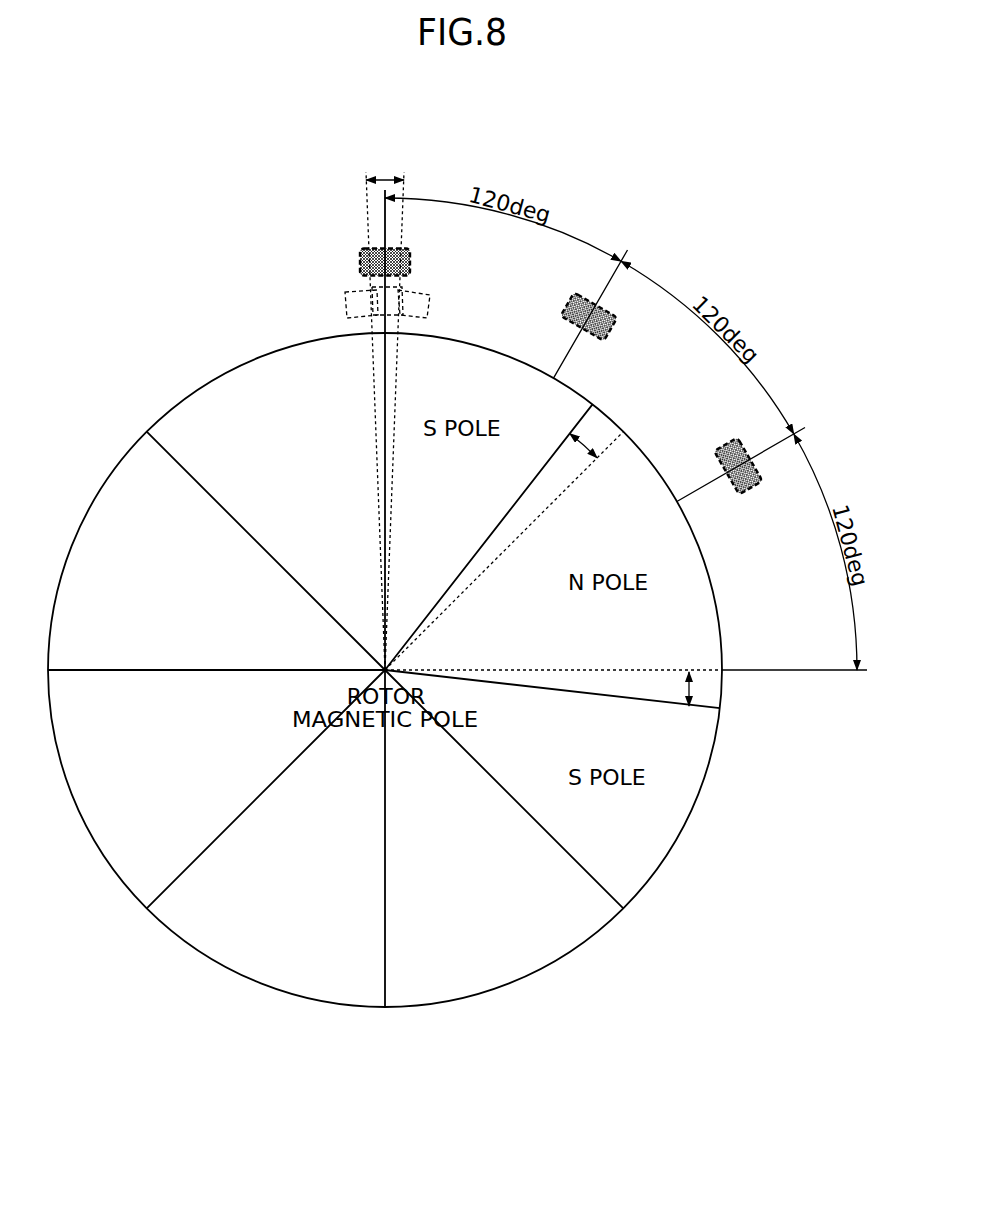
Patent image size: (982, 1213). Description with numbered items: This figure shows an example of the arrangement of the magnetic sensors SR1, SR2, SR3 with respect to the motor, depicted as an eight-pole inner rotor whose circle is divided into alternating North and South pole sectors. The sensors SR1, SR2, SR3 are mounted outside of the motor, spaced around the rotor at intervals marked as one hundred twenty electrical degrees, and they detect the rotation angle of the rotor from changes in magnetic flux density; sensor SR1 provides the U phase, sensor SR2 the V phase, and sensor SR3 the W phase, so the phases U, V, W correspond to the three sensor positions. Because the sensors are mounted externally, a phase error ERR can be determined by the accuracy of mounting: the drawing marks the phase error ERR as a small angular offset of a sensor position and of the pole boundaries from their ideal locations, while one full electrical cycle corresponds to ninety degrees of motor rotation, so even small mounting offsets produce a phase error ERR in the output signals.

The magnetic sensor SR1 is at (618, 322).
The magnetic sensor SR2 is at (748, 487).
The magnetic sensor SR3 is at (403, 285).
The U-phase sensor signal U is at (582, 313).
The V-phase sensor signal V is at (736, 459).
The W-phase sensor signal W is at (447, 264).
The phase error ERR is at (383, 180).